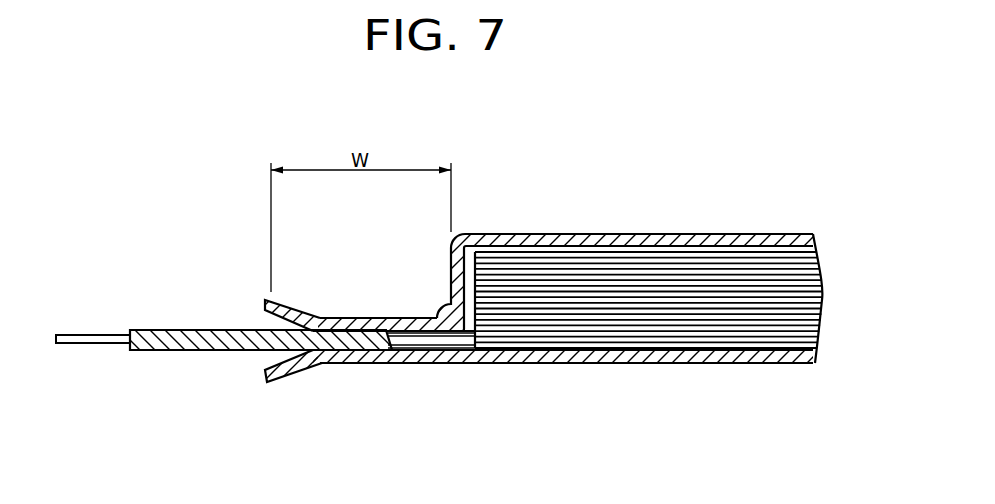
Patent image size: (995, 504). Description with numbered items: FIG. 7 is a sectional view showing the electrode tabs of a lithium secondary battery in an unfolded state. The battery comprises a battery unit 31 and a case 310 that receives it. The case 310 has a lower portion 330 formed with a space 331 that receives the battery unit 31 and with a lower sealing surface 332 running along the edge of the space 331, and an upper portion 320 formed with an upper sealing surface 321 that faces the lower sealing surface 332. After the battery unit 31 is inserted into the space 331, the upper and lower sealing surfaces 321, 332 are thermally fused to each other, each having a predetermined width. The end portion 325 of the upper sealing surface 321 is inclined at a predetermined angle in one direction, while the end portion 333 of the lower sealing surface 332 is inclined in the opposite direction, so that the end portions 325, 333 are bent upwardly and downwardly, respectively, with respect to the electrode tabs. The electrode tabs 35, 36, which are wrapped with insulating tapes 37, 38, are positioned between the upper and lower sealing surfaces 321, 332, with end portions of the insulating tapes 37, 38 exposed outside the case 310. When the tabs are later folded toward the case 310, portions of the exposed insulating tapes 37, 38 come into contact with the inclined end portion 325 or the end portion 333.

The case 310 is at (620, 390).
The battery unit 31 is at (683, 328).
The upper portion 320 is at (563, 419).
The upper sealing surface 321 is at (343, 360).
The end portion of the upper sealing surface 325 is at (272, 382).
The lower portion 330 is at (587, 242).
The space 331 is at (475, 233).
The lower sealing surface 332 is at (383, 320).
The end portion of the lower sealing surface 333 is at (267, 297).
The electrode tab 35 is at (94, 381).
The electrode tab 36 is at (102, 343).
The insulating tape 37 is at (287, 390).
The insulating tape 38 is at (363, 355).